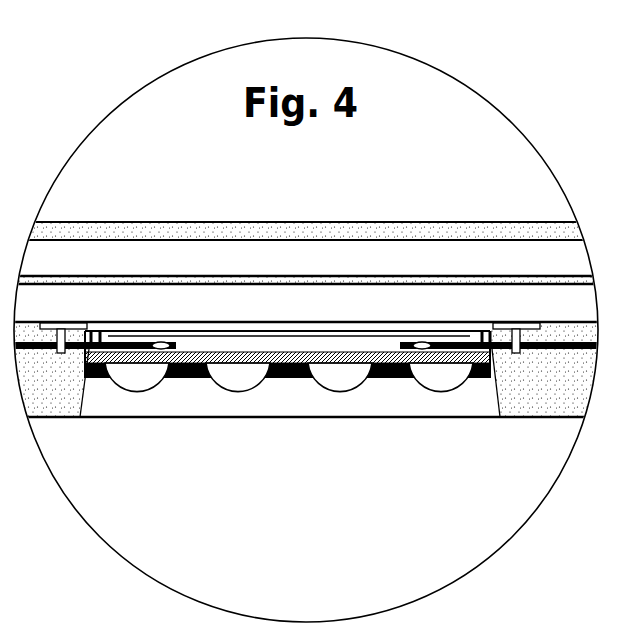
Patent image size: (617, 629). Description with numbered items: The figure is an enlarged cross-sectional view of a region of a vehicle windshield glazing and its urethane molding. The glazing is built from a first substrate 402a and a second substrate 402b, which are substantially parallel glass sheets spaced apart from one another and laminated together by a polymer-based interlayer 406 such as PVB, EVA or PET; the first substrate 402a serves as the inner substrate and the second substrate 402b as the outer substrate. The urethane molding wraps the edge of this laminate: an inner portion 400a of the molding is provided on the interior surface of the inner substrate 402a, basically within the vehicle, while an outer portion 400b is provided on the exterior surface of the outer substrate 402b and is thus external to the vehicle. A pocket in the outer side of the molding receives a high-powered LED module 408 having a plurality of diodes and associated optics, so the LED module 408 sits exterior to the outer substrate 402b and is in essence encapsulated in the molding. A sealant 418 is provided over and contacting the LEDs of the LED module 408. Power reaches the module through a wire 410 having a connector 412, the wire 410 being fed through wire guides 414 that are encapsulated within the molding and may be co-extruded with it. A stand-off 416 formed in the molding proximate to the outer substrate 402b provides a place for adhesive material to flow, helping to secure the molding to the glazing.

The inner portion of the urethane molding 400a is at (405, 226).
The outer portion of the urethane molding 400b is at (512, 402).
The first substrate 402a is at (485, 252).
The second substrate 402b is at (155, 298).
The polymer-based interlayer 406 is at (333, 279).
The LED module 408 is at (240, 398).
The wire 410 is at (557, 345).
The connector 412 is at (178, 378).
The wire guides 414 is at (60, 350).
The stand-off 416 is at (94, 331).
The sealant 418 is at (385, 378).